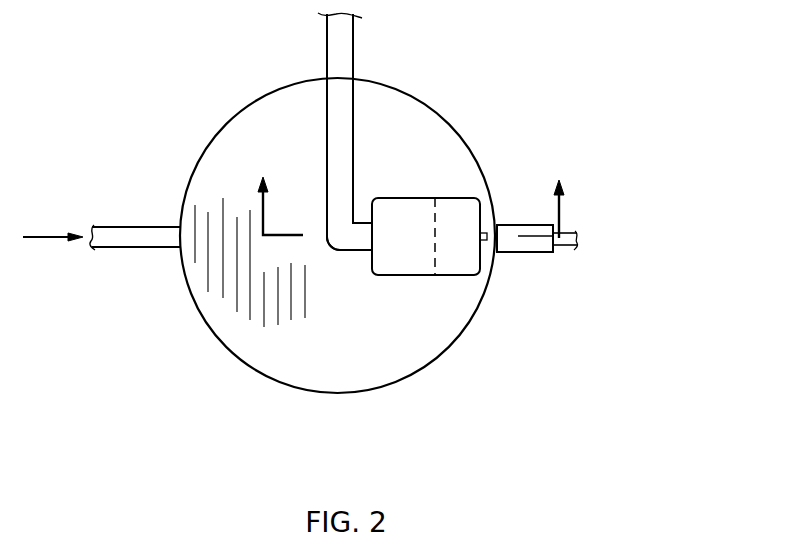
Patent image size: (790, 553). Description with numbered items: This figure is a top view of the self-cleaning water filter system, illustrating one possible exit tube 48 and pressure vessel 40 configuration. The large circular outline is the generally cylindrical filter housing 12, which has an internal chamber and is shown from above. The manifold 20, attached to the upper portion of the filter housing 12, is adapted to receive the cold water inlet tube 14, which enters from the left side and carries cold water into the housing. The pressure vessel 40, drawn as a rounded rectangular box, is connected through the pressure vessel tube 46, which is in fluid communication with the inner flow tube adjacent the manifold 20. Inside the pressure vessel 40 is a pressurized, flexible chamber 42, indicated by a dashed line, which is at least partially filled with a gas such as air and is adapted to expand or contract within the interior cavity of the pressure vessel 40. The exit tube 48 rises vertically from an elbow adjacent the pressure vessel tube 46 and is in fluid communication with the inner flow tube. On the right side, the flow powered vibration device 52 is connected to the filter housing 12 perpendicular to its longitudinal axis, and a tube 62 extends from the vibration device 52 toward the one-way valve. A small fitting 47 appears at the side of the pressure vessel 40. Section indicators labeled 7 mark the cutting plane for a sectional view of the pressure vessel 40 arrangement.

The section line 7- 7 is at (410, 192).
The filter housing 12 is at (222, 344).
The cold water inlet tube 14 is at (135, 227).
The manifold 20 is at (225, 152).
The pressure vessel 40 is at (417, 180).
The flexible chamber 42 is at (435, 228).
The pressure vessel tube 46 is at (352, 253).
The outlet 47 is at (497, 225).
The exit tube 48 is at (324, 42).
The flow powered vibration device 52 is at (527, 253).
The tube 62 is at (565, 247).